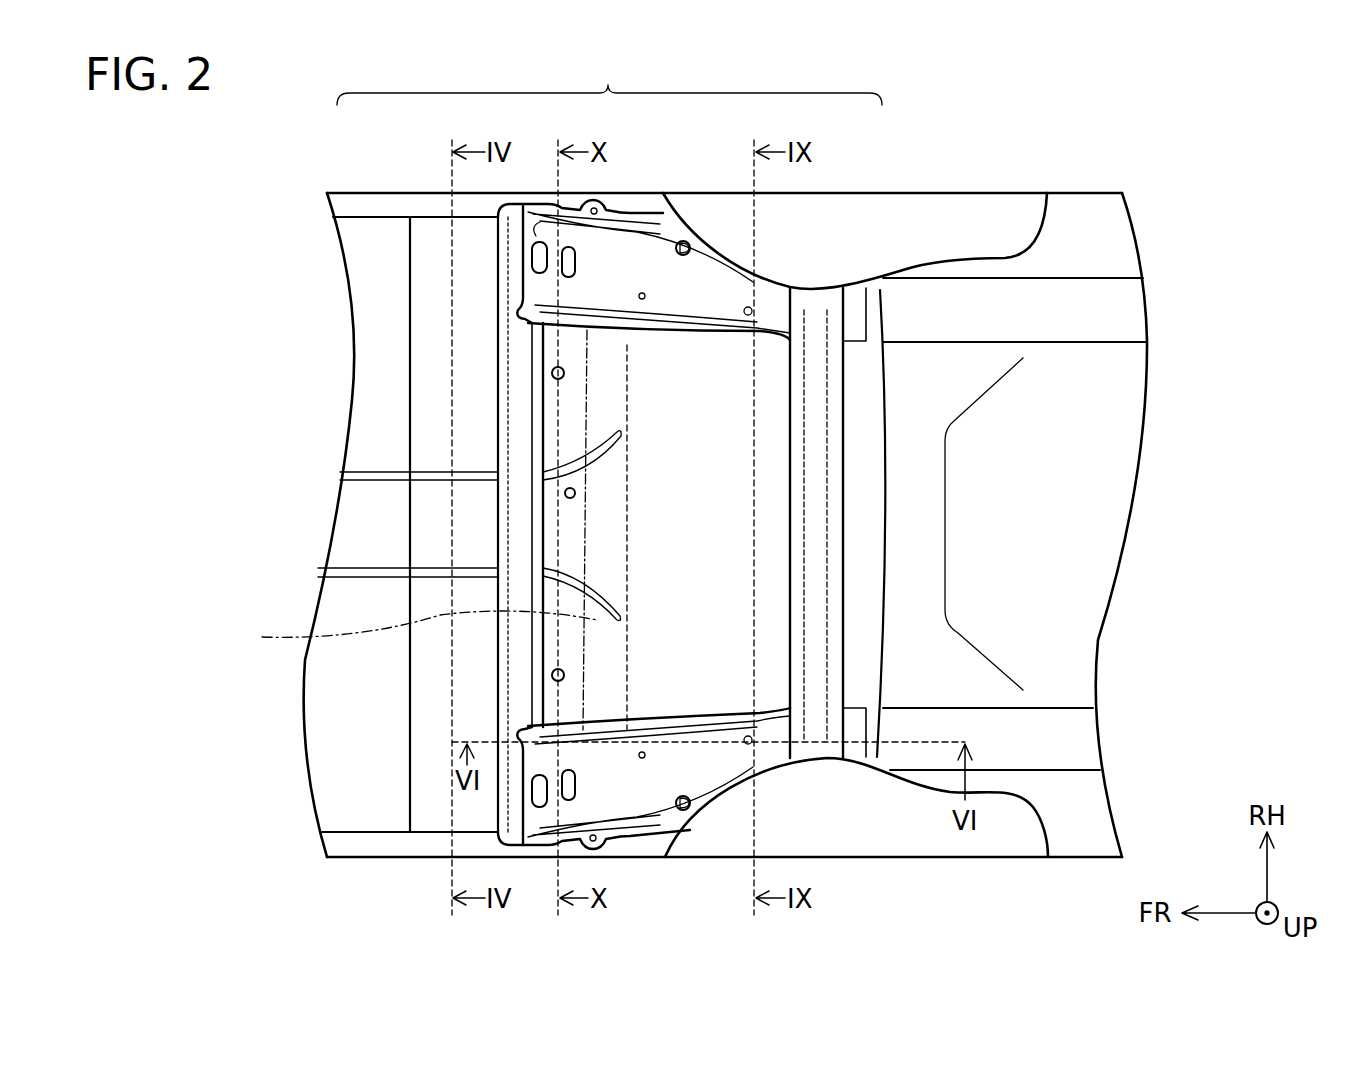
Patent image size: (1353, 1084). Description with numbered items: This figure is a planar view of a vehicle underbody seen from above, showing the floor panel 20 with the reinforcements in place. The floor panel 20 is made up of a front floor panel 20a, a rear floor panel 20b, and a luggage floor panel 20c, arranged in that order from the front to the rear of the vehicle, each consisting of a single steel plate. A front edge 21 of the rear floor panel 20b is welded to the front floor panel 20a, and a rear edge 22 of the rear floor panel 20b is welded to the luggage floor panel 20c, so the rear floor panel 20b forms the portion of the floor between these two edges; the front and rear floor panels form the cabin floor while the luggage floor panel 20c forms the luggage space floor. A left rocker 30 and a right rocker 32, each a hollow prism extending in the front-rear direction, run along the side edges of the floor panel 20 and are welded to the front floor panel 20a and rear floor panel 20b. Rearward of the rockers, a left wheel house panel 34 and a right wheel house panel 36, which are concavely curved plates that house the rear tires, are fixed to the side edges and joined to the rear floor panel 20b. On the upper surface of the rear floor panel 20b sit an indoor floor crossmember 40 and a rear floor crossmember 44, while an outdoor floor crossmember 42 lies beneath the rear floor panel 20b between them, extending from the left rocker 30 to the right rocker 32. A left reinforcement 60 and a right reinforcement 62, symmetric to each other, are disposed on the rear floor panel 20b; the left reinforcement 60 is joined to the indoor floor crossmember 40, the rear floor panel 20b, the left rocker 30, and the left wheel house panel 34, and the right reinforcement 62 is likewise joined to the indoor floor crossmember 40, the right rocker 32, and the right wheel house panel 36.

The floor panel 20 is at (609, 81).
The front floor panel 20a is at (387, 240).
The rear floor panel 20b is at (438, 240).
The luggage floor panel 20c is at (933, 380).
The front edge 21 is at (410, 337).
The rear edge 22 is at (887, 463).
The left rocker 30 is at (348, 850).
The right rocker 32 is at (345, 205).
The left wheel house panel 34 is at (1012, 838).
The right wheel house panel 36 is at (973, 210).
The indoor floor crossmember 40 is at (520, 668).
The outdoor floor crossmember 42 is at (403, 632).
The rear floor crossmember 44 is at (820, 545).
The left reinforcement 60 is at (514, 717).
The right reinforcement 62 is at (508, 258).